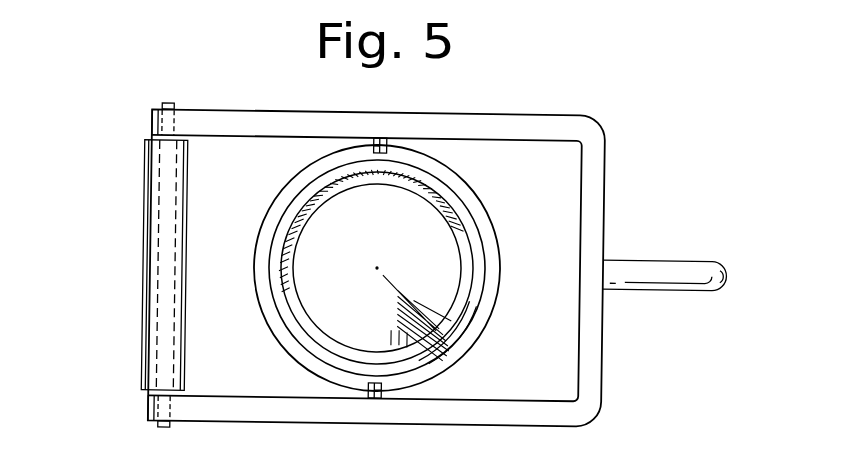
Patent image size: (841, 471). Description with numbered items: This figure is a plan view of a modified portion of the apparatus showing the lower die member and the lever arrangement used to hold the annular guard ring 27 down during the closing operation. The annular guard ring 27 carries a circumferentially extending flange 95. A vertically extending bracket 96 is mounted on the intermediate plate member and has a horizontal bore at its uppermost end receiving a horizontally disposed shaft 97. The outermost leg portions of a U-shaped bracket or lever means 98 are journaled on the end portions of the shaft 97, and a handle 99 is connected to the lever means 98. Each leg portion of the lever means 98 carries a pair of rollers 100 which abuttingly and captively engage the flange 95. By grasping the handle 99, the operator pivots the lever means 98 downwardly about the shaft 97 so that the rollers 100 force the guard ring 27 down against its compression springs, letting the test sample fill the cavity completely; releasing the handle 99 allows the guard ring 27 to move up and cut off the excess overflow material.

The annular guard ring 27 is at (465, 213).
The circumferentially extending flange 95 is at (467, 343).
The vertically extending bracket 96 is at (152, 303).
The horizontally disposed shaft 97 is at (158, 219).
The U-shaped bracket or lever means 98 is at (478, 413).
The handle 99 is at (690, 268).
The rollers 100 is at (396, 150).